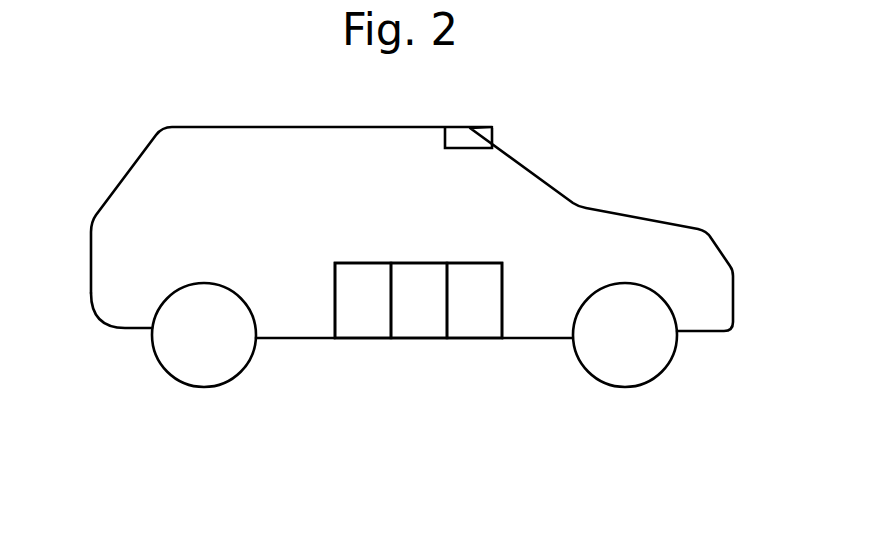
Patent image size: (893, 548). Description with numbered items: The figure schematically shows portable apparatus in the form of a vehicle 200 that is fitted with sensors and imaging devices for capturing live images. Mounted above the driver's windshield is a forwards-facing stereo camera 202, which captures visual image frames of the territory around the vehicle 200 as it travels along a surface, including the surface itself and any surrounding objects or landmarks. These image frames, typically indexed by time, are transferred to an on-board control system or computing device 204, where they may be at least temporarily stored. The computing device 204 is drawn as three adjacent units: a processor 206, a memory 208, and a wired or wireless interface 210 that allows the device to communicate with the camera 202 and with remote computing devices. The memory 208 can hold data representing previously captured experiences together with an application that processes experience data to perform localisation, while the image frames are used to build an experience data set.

The vehicle 200 is at (133, 118).
The stereo camera 202 is at (468, 137).
The control system/computing device 204 is at (326, 248).
The processor 206 is at (362, 322).
The memory 208 is at (427, 327).
The interface 210 is at (481, 322).